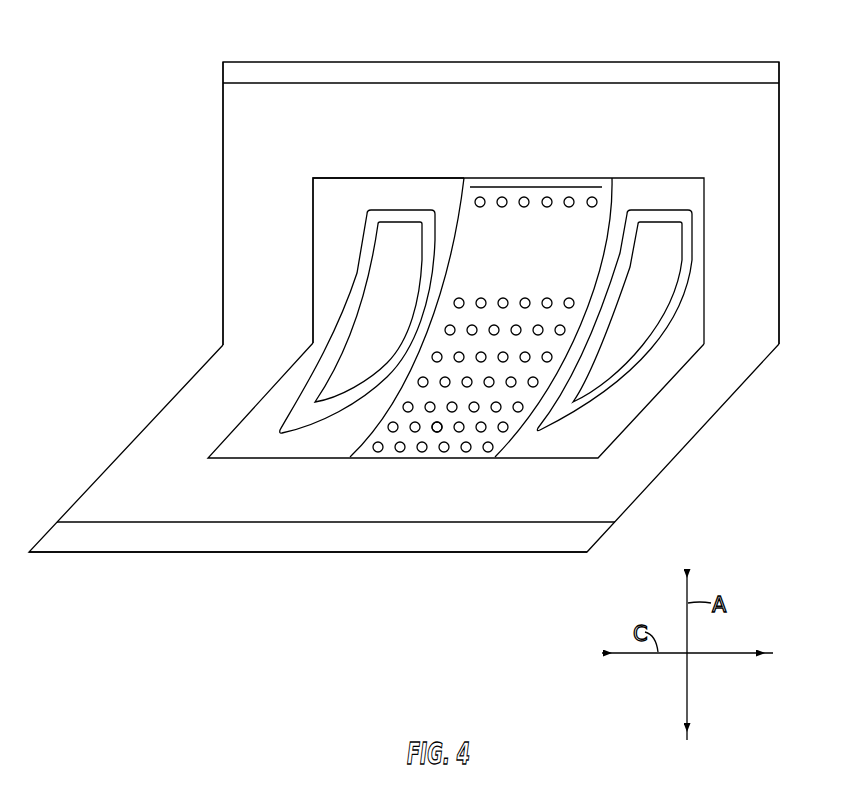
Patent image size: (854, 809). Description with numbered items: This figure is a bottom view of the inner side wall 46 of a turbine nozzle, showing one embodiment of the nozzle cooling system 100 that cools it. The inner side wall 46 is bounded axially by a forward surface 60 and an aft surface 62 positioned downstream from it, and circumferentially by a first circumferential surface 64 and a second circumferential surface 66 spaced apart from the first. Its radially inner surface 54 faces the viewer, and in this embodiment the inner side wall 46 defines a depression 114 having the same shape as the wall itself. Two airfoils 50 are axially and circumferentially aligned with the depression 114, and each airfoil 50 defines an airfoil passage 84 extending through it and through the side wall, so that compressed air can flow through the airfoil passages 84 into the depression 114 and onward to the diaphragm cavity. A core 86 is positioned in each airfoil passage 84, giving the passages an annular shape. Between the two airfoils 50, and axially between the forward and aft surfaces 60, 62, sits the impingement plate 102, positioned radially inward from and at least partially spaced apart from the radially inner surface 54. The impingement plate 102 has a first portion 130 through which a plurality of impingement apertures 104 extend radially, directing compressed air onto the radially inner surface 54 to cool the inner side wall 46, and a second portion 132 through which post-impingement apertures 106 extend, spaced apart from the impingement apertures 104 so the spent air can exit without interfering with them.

The inner side wall 46 is at (180, 117).
The airfoil 50 is at (489, 282).
The radially inner surface 54 is at (661, 138).
The forward surface 60 is at (330, 61).
The aft surface 62 is at (323, 553).
The first circumferential surface 64 is at (223, 207).
The second circumferential surface 66 is at (780, 184).
The airfoil passage 84 is at (347, 324).
The core 86 is at (393, 245).
The nozzle cooling system 100 is at (608, 470).
The impingement plate 102 is at (476, 236).
The impingement aperture 104 is at (482, 299).
The post-impingement aperture 106 is at (547, 196).
The depression 114 is at (327, 208).
The first portion 130 is at (447, 430).
The second portion 132 is at (562, 187).